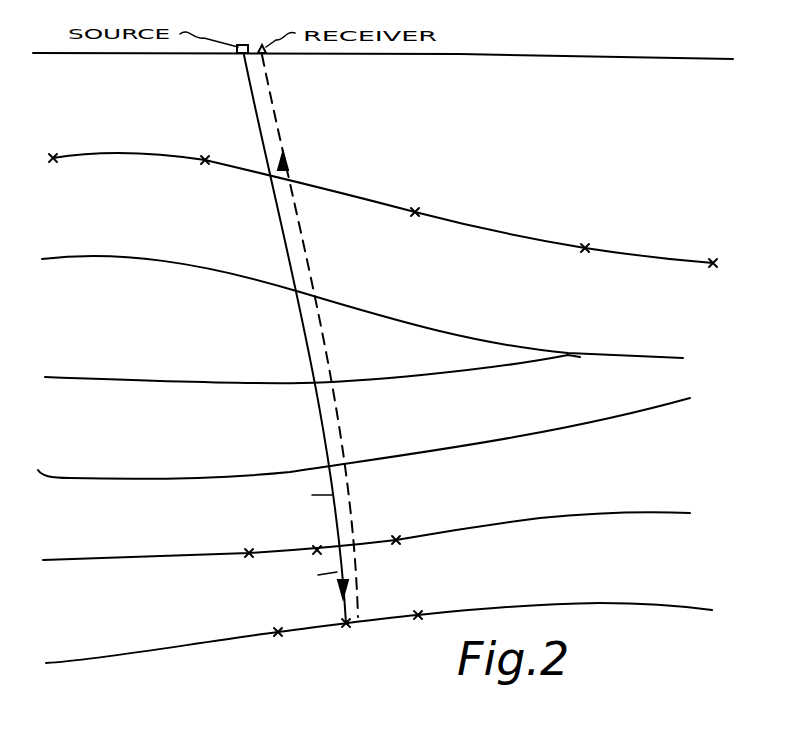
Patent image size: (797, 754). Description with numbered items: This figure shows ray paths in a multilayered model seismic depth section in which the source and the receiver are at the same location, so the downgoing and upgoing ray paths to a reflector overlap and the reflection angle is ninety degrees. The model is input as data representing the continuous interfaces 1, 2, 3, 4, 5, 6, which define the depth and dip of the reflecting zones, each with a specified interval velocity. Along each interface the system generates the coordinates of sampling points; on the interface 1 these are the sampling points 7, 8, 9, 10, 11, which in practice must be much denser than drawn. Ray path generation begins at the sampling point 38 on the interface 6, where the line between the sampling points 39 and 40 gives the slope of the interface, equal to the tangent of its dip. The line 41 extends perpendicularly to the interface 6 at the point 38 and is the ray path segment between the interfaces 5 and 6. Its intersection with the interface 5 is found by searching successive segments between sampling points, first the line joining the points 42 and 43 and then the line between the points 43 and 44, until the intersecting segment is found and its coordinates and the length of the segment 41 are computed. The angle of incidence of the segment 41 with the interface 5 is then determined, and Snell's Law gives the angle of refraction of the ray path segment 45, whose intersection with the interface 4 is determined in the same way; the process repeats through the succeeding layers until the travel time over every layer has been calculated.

The interface 1 is at (493, 230).
The interface 2 is at (465, 338).
The interface 3 is at (420, 375).
The interface 4 is at (505, 445).
The interface 5 is at (510, 520).
The interface 6 is at (545, 605).
The sampling point 7 is at (54, 156).
The sampling point 8 is at (205, 158).
The sampling point 9 is at (415, 210).
The sampling point 10 is at (585, 246).
The sampling point 11 is at (713, 261).
The sampling point 38 is at (346, 628).
The sampling point 39 is at (277, 631).
The sampling point 40 is at (419, 614).
The ray path segment 41 is at (314, 579).
The sampling point 42 is at (248, 552).
The sampling point 43 is at (316, 549).
The sampling point 44 is at (397, 538).
The ray path segment 45 is at (308, 496).